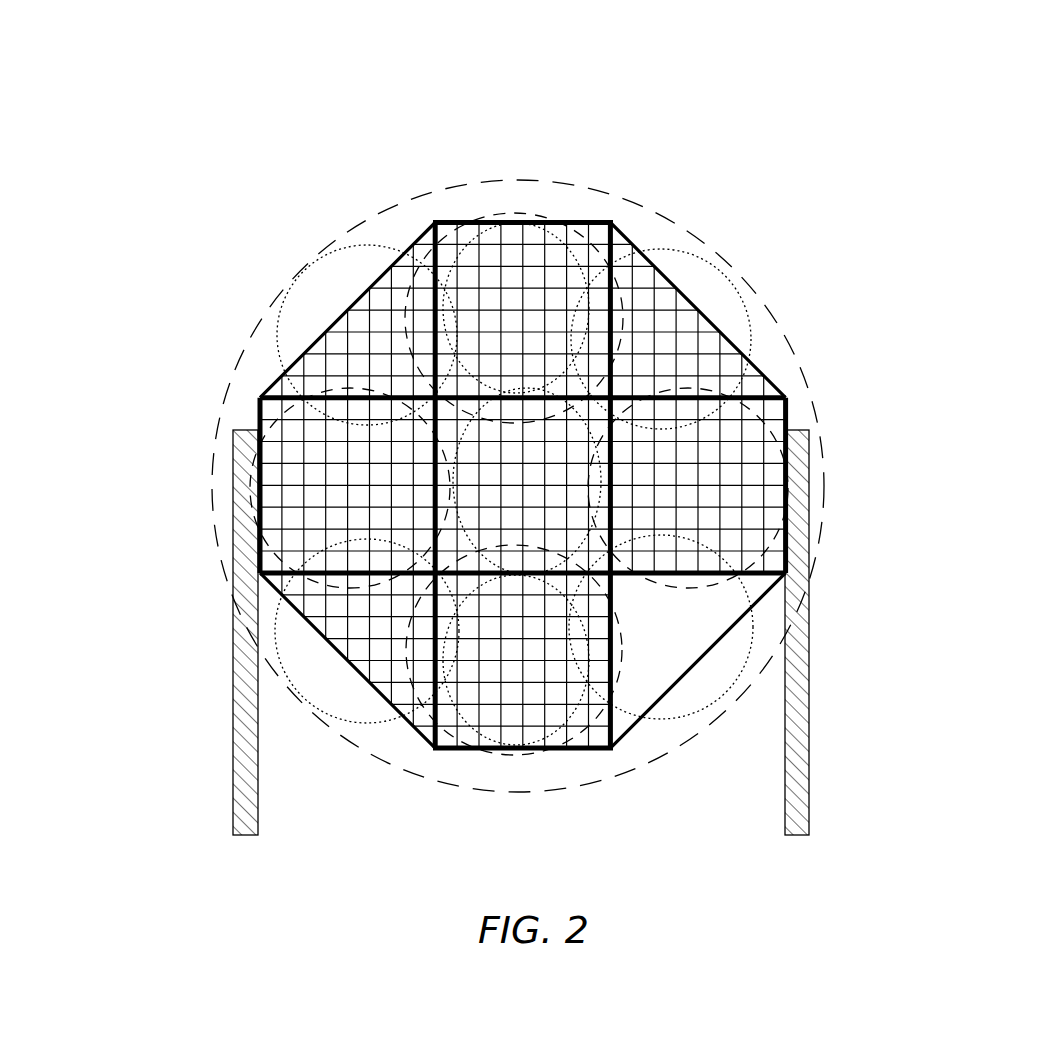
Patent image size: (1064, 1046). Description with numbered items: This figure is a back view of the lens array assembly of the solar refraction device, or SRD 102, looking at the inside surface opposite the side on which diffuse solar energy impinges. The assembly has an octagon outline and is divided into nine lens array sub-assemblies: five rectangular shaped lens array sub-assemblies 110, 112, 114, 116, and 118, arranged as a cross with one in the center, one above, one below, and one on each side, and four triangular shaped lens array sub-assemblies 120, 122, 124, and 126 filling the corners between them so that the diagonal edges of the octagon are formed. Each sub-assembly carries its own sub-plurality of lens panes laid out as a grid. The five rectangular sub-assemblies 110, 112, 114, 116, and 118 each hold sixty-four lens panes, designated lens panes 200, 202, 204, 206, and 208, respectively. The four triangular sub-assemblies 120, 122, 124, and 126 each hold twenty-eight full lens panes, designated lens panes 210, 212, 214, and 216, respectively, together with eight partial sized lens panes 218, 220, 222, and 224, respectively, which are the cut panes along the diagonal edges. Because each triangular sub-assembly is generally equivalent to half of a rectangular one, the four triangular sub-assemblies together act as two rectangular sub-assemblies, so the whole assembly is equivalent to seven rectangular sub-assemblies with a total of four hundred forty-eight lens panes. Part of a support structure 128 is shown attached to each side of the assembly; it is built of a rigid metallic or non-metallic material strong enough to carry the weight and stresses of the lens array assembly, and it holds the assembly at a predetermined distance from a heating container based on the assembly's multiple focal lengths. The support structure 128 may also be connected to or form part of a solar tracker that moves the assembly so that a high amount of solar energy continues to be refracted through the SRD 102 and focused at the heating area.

The SRD 102 is at (933, 153).
The lens array sub-assembly 110 is at (507, 190).
The lens array sub-assembly 112 is at (790, 380).
The lens array sub-assembly 114 is at (258, 397).
The lens array sub-assembly 116 is at (522, 760).
The lens array sub-assembly 118 is at (617, 477).
The lens array sub-assembly 120 is at (665, 752).
The lens array sub-assembly 122 is at (367, 727).
The lens array sub-assembly 124 is at (300, 262).
The lens array sub-assembly 126 is at (668, 237).
The support structure 128 is at (858, 803).
The lens panes 200 is at (585, 222).
The lens panes 202 is at (757, 478).
The lens panes 204 is at (310, 505).
The lens panes 206 is at (553, 750).
The lens panes 208 is at (533, 495).
The lens panes 210 is at (707, 605).
The lens panes 212 is at (360, 628).
The lens panes 214 is at (300, 352).
The lens panes 216 is at (650, 322).
The partial sized lens panes 218 is at (683, 667).
The partial sized lens panes 220 is at (335, 648).
The partial sized lens panes 222 is at (387, 287).
The partial sized lens panes 224 is at (620, 400).